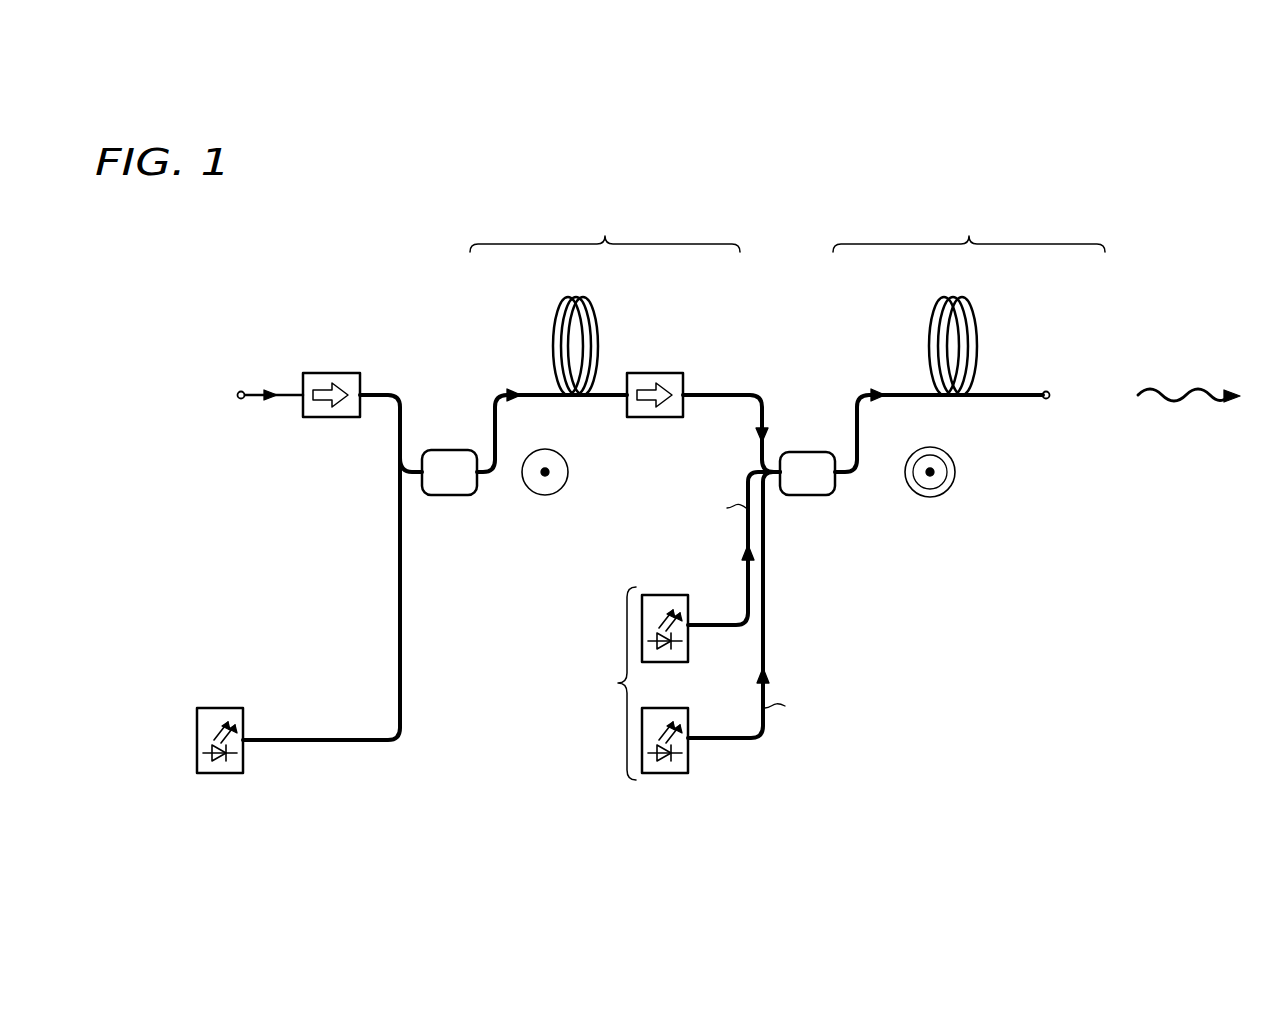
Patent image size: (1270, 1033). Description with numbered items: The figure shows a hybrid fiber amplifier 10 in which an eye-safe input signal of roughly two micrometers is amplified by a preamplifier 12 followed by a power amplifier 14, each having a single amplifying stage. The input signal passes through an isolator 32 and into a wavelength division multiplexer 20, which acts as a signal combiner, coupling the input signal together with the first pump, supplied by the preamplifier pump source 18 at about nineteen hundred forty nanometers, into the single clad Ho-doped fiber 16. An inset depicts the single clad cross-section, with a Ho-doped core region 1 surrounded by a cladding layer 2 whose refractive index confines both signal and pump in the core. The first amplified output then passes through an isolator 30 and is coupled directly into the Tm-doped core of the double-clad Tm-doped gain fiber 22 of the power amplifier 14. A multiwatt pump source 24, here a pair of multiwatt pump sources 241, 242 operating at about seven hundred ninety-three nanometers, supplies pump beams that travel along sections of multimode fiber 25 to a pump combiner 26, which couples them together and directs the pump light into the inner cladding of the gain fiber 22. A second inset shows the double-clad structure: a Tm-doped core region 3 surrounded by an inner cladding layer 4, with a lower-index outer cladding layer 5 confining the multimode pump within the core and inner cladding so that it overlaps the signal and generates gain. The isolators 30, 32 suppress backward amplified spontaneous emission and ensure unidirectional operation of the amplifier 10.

The hybrid fiber amplifier 10 is at (208, 245).
The preamplifier 12 is at (621, 225).
The power amplifier 14 is at (983, 225).
The single clad Ho-doped fiber 16 is at (598, 325).
The preamplifier pump source 18 is at (219, 707).
The wavelength division multiplexer 20 is at (449, 450).
The Tm-doped double-clad gain fiber 22 is at (976, 325).
The multiwatt pump source 24 is at (613, 694).
The first multiwatt pump source 241 is at (661, 594).
The second multiwatt pump source 242 is at (661, 774).
The multimode fiber 25 is at (747, 586).
The pump combiner 26 is at (809, 452).
The isolator 30 is at (647, 373).
The inter-amplifier isolator 32 is at (333, 372).
The core region 1 is at (545, 478).
The cladding layer 2 is at (562, 460).
The core region 3 is at (929, 477).
The inner cladding layer 4 is at (940, 485).
The outer cladding layer 5 is at (948, 452).